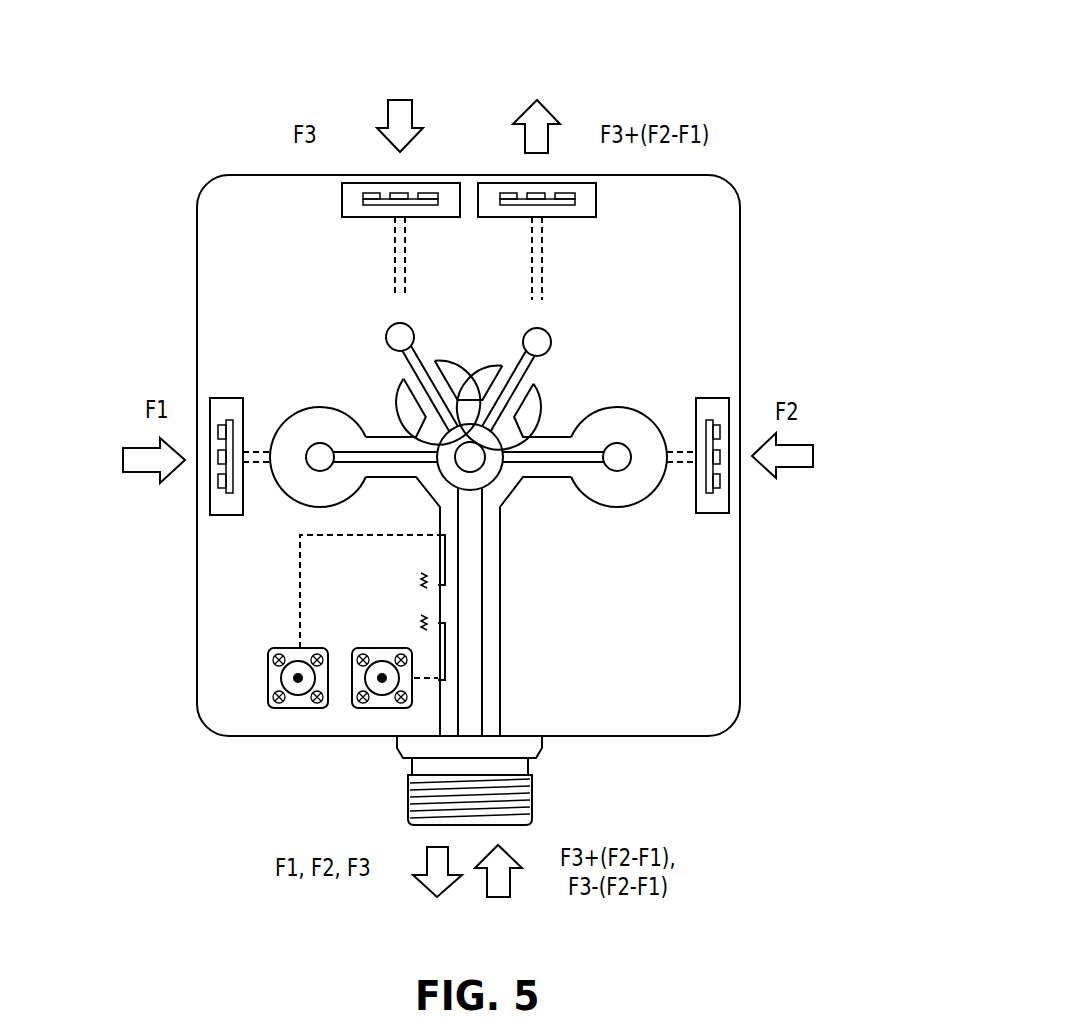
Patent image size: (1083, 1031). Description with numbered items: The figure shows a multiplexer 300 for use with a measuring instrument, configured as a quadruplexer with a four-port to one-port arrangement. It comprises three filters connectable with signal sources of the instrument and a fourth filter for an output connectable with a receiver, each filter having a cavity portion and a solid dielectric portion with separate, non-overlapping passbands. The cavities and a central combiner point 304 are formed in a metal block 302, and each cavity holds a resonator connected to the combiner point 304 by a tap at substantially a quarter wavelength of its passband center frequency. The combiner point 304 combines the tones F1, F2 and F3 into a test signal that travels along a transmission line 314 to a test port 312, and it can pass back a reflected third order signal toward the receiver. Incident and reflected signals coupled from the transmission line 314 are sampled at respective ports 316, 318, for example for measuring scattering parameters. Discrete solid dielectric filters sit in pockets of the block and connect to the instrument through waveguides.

The multiplexer 300 is at (746, 44).
The metal block 302 is at (667, 716).
The combiner point 304 is at (474, 462).
The test port 312 is at (573, 778).
The transmission line 314 is at (468, 690).
The port 316 is at (239, 709).
The port 318 is at (337, 742).